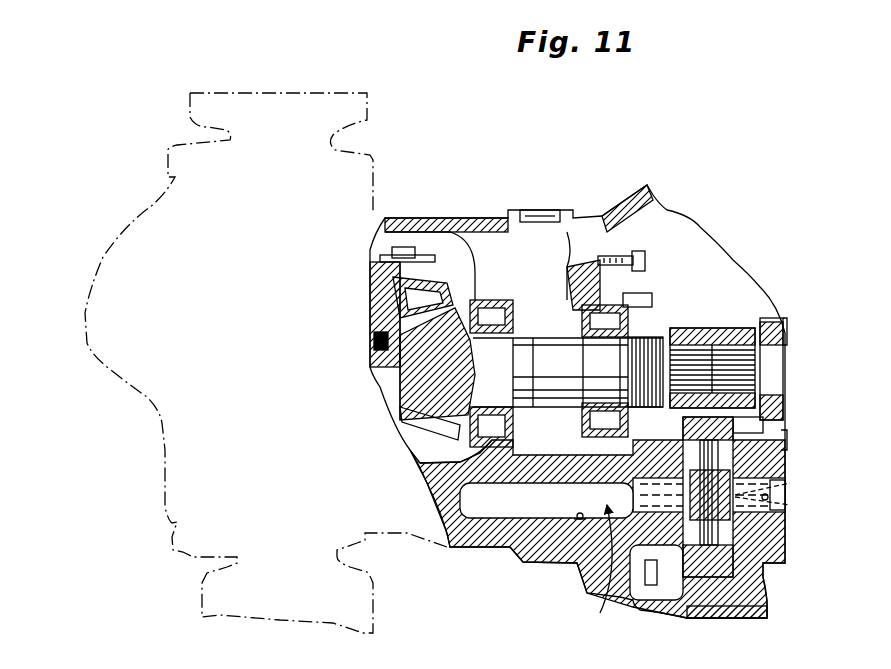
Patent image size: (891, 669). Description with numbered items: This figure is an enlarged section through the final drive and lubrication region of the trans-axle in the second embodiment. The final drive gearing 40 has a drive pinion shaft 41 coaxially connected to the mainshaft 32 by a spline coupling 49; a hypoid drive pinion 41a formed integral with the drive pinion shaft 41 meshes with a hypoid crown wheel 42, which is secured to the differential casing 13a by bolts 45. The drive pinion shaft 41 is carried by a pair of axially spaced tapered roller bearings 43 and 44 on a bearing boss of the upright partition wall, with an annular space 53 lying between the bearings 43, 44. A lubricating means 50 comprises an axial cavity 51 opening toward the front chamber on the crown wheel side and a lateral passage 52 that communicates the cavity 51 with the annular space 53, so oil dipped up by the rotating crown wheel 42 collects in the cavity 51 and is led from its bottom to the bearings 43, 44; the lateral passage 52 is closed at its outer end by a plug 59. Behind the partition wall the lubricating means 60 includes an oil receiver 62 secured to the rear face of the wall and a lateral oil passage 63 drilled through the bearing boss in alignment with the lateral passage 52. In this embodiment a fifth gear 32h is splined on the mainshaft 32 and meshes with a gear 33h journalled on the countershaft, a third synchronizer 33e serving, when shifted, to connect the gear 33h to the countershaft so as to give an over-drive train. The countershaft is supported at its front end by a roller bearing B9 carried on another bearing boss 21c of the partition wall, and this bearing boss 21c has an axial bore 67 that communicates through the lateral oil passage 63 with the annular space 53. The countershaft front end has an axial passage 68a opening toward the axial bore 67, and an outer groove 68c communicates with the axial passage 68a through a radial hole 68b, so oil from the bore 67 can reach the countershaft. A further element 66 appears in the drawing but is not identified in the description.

The differential casing 13a is at (372, 282).
The bearing boss 21c is at (670, 537).
The mainshaft 32 is at (777, 378).
The fifth gear 32h is at (787, 330).
The third synchronizer 33e is at (731, 567).
The gear 33h is at (786, 441).
The final drive gearing 40 is at (376, 340).
The drive pinion shaft 41 is at (475, 372).
The hypoid drive pinion 41a is at (417, 420).
The hypoid crown wheel 42 is at (392, 300).
The tapered roller bearing 43 is at (513, 480).
The tapered roller bearing 44 is at (634, 291).
The bolts 45 is at (402, 247).
The spline coupling 49 is at (717, 328).
The lubricating means 50 is at (499, 245).
The axial cavity 51 is at (470, 236).
The lateral passage 52 is at (580, 228).
The annular space 53 is at (538, 330).
The plug 59 is at (538, 210).
The lubricating means 60 is at (580, 519).
The oil receiver 62 is at (650, 300).
The lateral oil passage 63 is at (560, 462).
The oil passage 66 is at (550, 481).
The axial bore 67 is at (573, 540).
The axial passage 68a is at (745, 496).
The radial hole 68b is at (787, 506).
The outer groove 68c is at (787, 492).
The roller bearing B9 is at (590, 564).